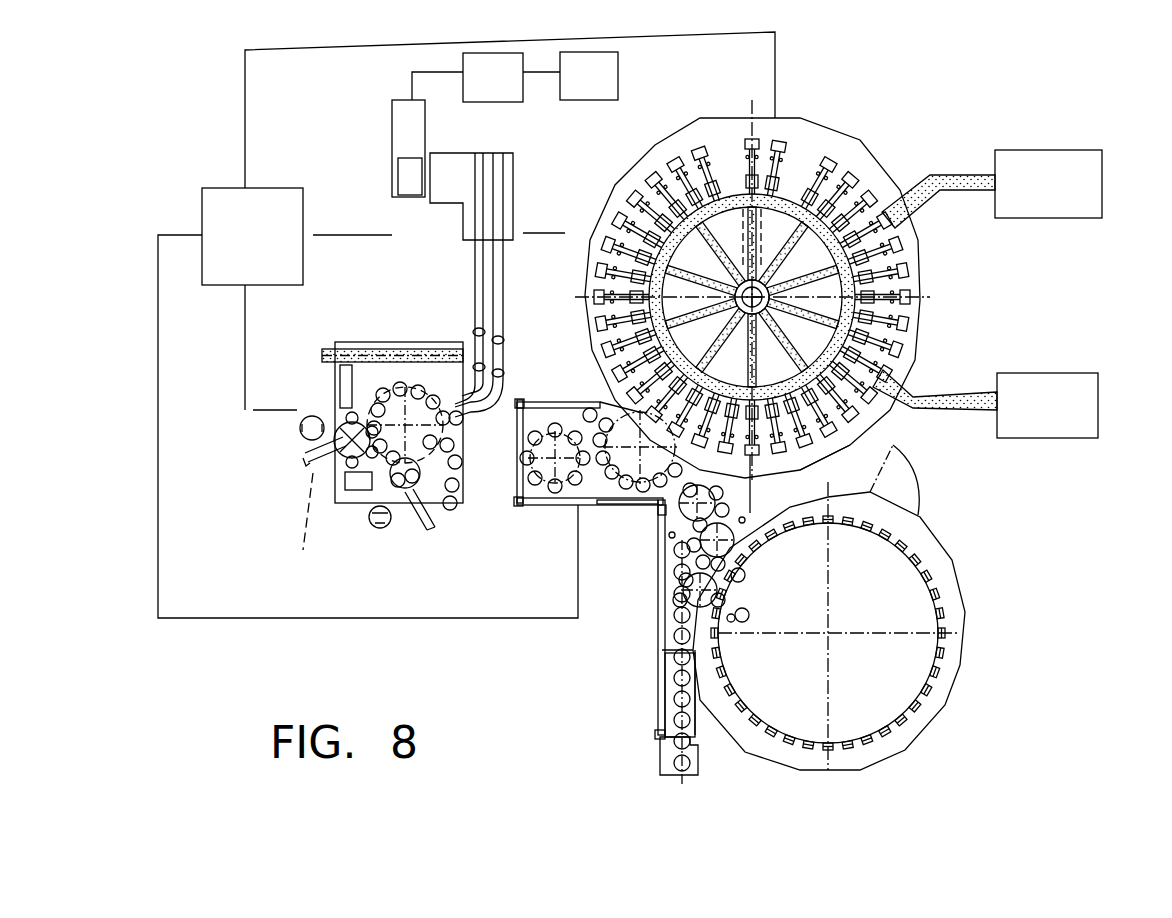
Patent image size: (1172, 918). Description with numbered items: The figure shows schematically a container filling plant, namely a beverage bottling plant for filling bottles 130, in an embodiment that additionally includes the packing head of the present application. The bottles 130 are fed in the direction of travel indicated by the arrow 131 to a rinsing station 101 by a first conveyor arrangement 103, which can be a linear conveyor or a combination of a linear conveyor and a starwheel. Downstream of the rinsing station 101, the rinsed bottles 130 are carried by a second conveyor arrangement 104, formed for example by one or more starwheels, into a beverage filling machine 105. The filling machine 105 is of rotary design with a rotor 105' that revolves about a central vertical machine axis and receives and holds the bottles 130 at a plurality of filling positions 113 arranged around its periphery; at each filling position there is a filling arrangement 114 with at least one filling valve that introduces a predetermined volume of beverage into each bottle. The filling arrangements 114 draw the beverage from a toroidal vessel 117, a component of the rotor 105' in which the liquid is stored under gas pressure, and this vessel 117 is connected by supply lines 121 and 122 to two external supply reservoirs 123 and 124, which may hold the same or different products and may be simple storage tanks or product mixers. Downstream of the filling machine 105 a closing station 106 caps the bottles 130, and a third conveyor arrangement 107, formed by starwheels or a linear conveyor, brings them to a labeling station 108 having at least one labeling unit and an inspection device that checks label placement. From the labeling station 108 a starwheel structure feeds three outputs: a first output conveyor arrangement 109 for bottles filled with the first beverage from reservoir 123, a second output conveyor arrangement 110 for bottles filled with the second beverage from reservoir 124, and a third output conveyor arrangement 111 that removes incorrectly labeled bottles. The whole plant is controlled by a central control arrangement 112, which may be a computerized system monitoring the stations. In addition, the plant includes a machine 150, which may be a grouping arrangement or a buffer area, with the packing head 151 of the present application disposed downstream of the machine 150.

The rinsing station 101 is at (975, 540).
The first conveyor arrangement 103 is at (693, 705).
The second conveyor arrangement 104 is at (670, 563).
The beverage filling machine 105 is at (803, 290).
The rotor 105' is at (752, 286).
The closing station 106 is at (572, 398).
The third conveyor arrangement 107 is at (524, 515).
The labeling station 108 is at (360, 540).
The first output conveyor arrangement 109 is at (500, 325).
The second output conveyor arrangement 110 is at (477, 275).
The third output conveyor arrangement 111 is at (368, 347).
The central control arrangement 112 is at (237, 256).
The filling positions 113 is at (905, 231).
The filling arrangement 114 is at (902, 318).
The toroidal vessel 117 is at (843, 443).
The supply line 121 is at (950, 173).
The supply line 122 is at (953, 392).
The external supply reservoir 123 is at (1094, 190).
The external supply reservoir 124 is at (1097, 408).
The bottles 130 is at (692, 722).
The arrow 131 is at (643, 700).
The machine 150 is at (478, 84).
The packing head 151 is at (574, 83).